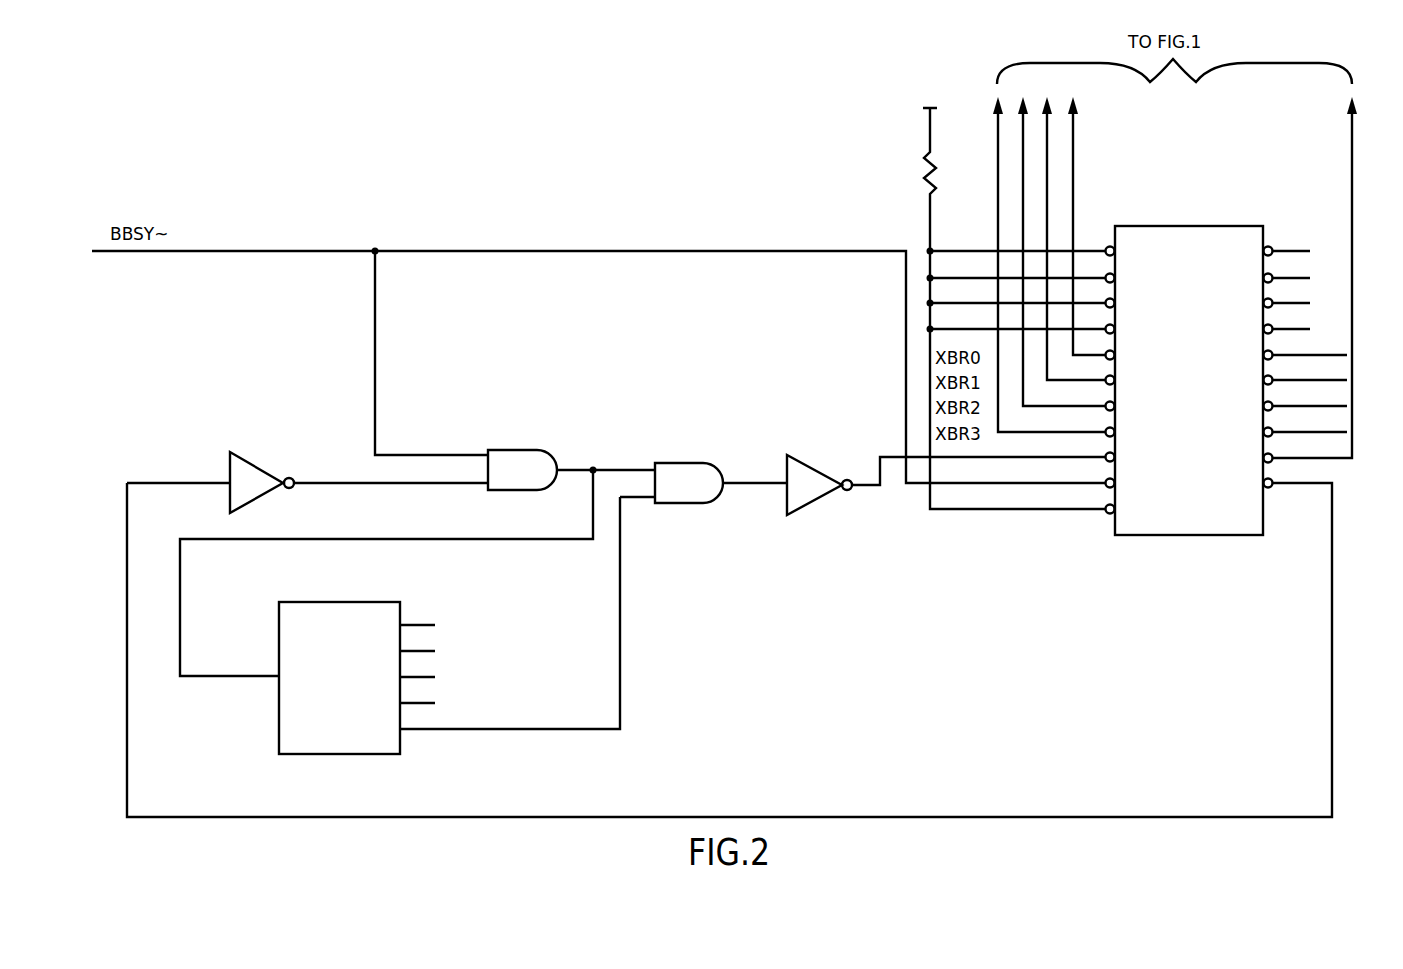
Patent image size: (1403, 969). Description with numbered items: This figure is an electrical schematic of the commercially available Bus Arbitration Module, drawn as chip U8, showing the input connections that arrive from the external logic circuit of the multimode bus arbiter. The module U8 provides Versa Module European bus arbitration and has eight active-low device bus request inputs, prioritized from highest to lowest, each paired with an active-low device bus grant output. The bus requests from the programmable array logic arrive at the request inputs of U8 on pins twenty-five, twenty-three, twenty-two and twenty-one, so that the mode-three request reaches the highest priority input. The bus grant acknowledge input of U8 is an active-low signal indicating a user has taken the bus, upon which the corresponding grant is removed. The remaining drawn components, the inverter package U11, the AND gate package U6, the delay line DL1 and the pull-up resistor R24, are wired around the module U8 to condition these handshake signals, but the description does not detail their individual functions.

The 68452 bus arbiter IC U8 is at (1215, 382).
The 54LS04 inverter U11 is at (616, 484).
The 54LS08 AND gate U6 is at (483, 578).
The 51990003-006 50 nanosecond delay line DL1 is at (355, 692).
The 1K resistor R24 is at (1014, 308).